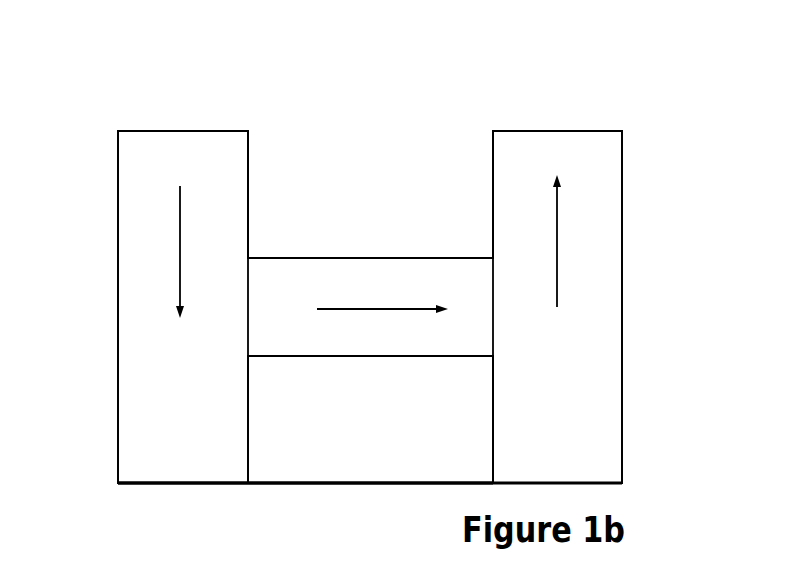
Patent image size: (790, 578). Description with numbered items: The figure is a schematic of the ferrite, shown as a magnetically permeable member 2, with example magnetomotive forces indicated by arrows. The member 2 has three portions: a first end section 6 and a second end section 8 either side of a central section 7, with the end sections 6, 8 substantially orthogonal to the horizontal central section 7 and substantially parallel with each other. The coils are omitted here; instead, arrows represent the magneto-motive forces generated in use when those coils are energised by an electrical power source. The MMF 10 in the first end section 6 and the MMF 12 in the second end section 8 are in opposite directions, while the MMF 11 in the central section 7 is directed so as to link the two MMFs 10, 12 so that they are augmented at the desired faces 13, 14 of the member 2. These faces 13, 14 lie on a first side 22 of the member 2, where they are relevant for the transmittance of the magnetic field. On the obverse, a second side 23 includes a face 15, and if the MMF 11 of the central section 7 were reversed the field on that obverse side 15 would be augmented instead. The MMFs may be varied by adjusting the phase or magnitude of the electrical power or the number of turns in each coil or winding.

The magnetically permeable member 2 is at (642, 110).
The first end section 6 is at (140, 418).
The central section 7 is at (373, 343).
The second end section 8 is at (590, 309).
The magneto-motive force 10 is at (180, 256).
The magneto-motive force 11 is at (360, 309).
The magneto-motive force 12 is at (557, 234).
The face 13 is at (192, 131).
The face 14 is at (562, 131).
The face 15 is at (180, 503).
The first side 22 is at (364, 137).
The second side 23 is at (343, 502).